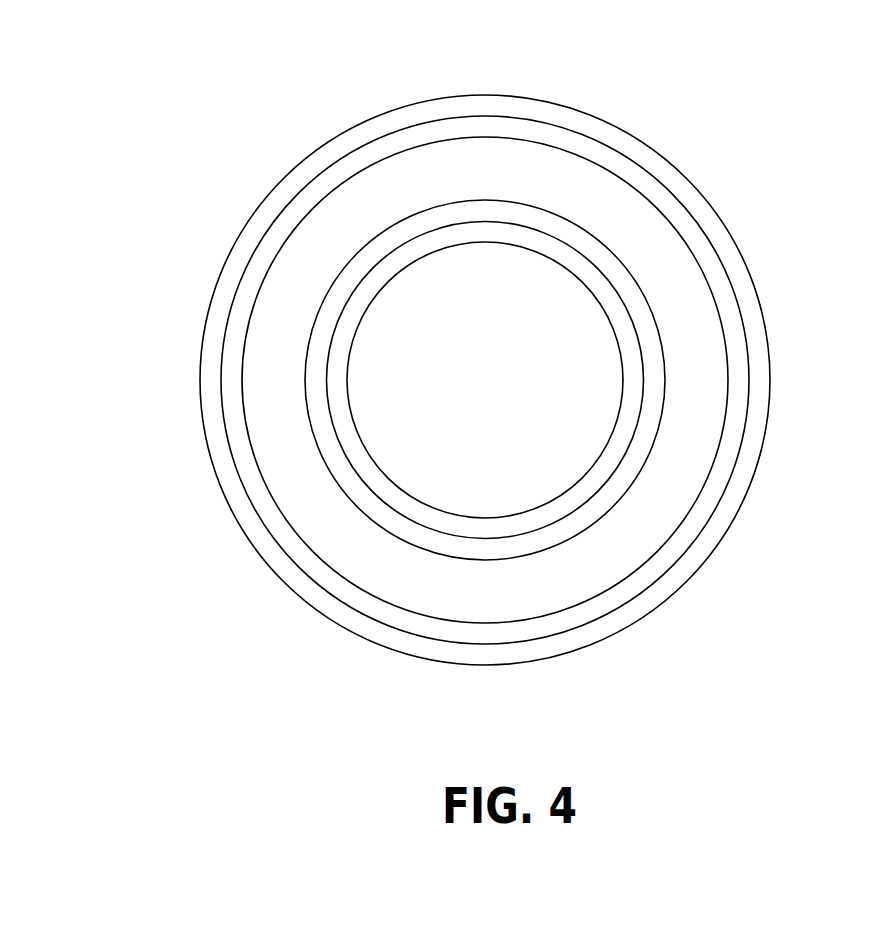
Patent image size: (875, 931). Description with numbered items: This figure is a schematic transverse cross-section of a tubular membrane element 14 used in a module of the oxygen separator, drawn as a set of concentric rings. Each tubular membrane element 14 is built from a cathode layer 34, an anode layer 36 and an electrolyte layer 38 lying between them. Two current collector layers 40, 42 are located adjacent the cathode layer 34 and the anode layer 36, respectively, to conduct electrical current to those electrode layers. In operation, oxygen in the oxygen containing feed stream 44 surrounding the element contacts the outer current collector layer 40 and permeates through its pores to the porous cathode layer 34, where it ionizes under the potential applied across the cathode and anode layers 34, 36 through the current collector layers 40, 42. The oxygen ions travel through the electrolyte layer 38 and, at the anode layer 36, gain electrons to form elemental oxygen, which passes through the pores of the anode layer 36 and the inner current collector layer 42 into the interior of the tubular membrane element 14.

The tubular membrane element 14 is at (221, 624).
The oxygen containing feed stream 44 is at (244, 146).
The current collector layer 42 is at (757, 337).
The cathode layer 34 is at (687, 228).
The electrolyte layer 38 is at (688, 465).
The anode layer 36 is at (637, 298).
The current collector layer 40 is at (433, 525).